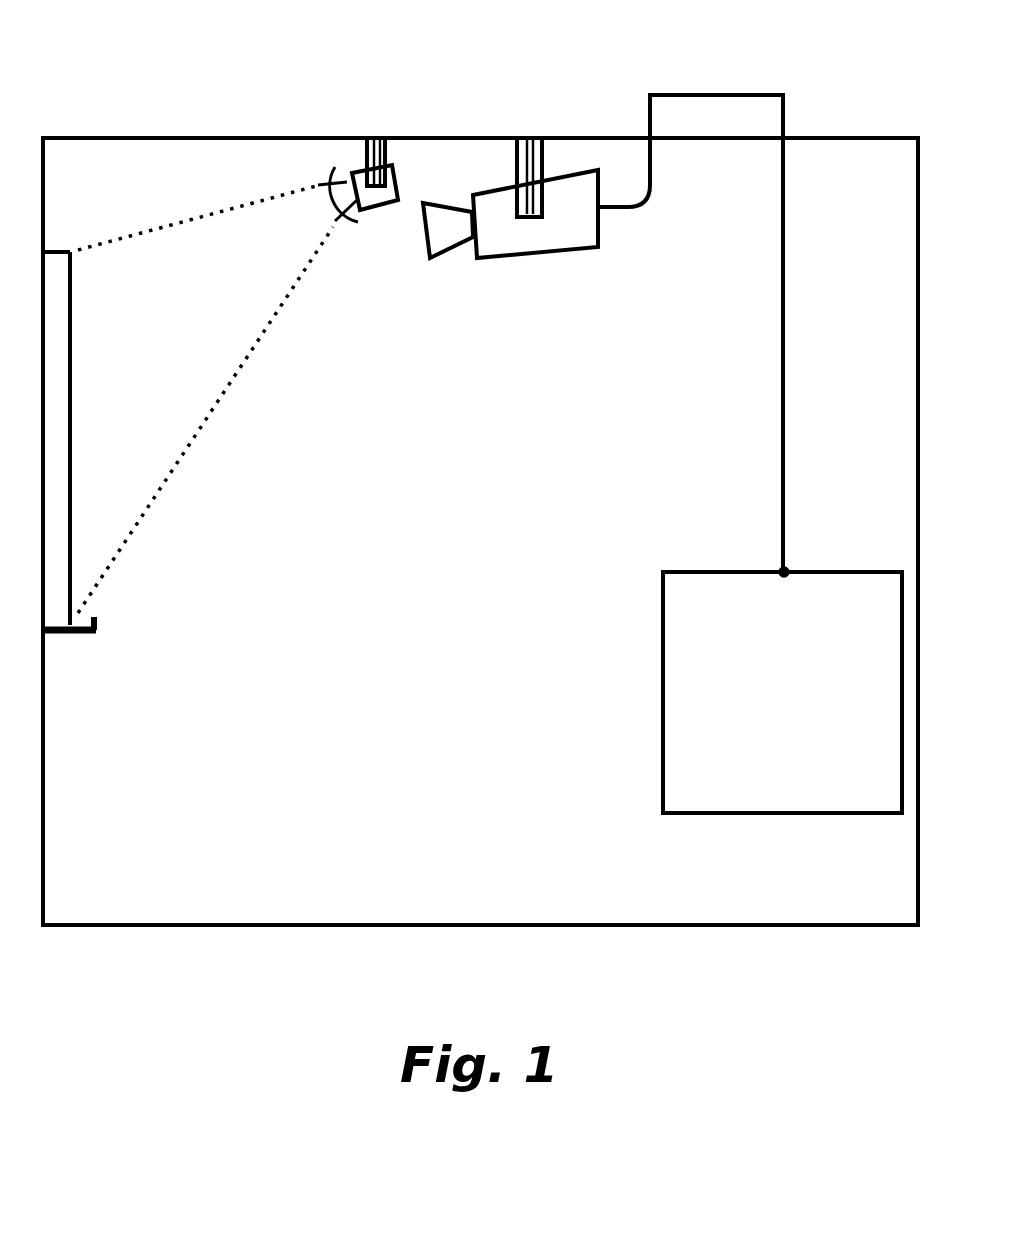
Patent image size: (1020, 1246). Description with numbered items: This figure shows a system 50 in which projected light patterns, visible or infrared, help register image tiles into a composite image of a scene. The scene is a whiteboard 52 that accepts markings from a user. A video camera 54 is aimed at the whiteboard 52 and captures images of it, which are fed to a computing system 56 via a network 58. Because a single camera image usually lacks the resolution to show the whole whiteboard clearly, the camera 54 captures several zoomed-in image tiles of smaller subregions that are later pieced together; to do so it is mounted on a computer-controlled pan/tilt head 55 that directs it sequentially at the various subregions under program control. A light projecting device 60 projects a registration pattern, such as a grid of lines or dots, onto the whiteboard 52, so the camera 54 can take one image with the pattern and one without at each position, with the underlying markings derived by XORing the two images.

The system 50 is at (268, 68).
The whiteboard 52 is at (73, 358).
The video camera 54 is at (535, 240).
The pan/tilt head 55 is at (532, 162).
The computing system 56 is at (700, 583).
The network 58 is at (783, 405).
The light projecting device 60 is at (397, 180).